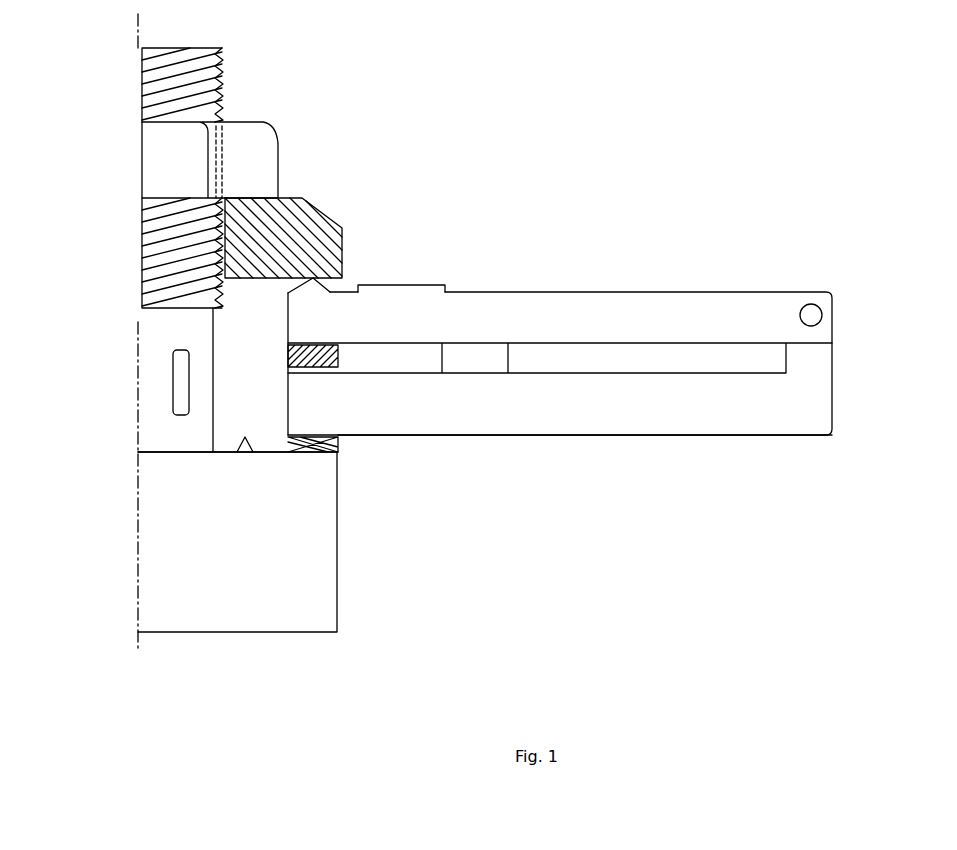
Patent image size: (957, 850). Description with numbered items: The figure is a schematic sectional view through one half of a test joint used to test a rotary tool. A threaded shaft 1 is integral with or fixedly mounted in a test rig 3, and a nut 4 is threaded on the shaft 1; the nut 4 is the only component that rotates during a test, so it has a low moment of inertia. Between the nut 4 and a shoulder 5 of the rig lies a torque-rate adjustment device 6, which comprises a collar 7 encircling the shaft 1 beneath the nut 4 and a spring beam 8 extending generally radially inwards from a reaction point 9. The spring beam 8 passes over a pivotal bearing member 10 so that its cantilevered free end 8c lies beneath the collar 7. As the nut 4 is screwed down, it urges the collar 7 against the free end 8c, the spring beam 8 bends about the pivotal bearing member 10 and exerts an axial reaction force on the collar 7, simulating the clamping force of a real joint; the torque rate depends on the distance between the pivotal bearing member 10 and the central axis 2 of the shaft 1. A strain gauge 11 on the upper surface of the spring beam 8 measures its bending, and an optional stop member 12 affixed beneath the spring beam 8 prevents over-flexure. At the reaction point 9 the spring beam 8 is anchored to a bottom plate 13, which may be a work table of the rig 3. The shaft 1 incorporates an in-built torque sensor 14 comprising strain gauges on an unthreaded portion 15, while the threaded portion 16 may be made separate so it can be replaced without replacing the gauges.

The threaded shaft 1 is at (250, 86).
The central axis 2 is at (133, 577).
The test rig 3 is at (287, 610).
The nut 4 is at (257, 147).
The shoulder 5 is at (245, 440).
The torque-rate adjustment device 6 is at (451, 235).
The collar 7 is at (318, 223).
The spring beam 8 is at (626, 298).
The free end 8c is at (345, 270).
The reaction point 9 is at (813, 305).
The pivotal bearing member 10 is at (480, 352).
The strain gauge 11 is at (437, 283).
The stop member 12 is at (338, 367).
The bottom plate 13 is at (600, 410).
The torque sensor 14 is at (173, 395).
The unthreaded portion 15 is at (151, 336).
The threaded portion 16 is at (138, 275).